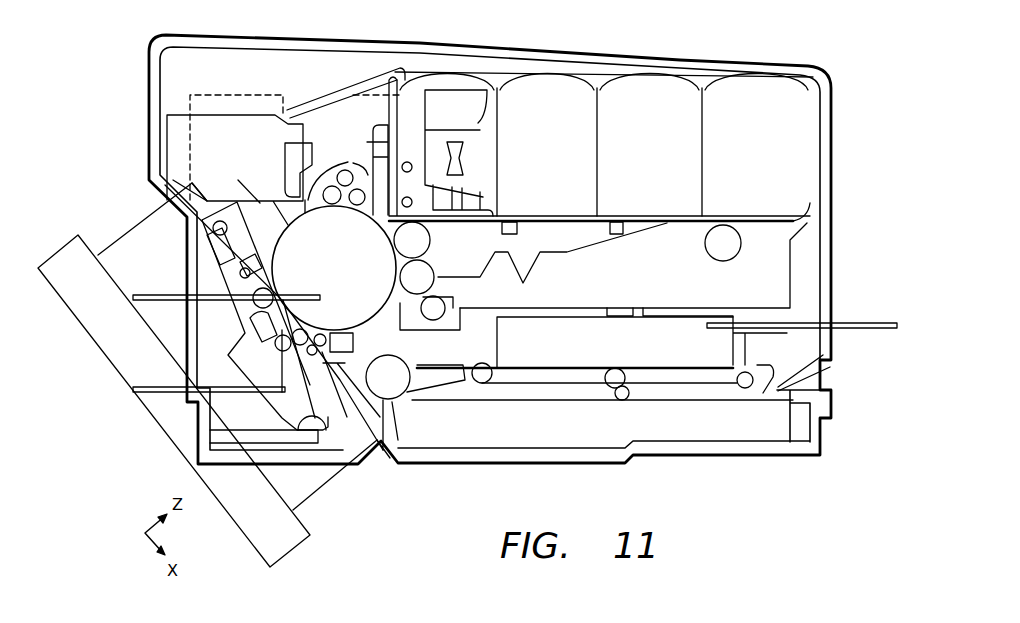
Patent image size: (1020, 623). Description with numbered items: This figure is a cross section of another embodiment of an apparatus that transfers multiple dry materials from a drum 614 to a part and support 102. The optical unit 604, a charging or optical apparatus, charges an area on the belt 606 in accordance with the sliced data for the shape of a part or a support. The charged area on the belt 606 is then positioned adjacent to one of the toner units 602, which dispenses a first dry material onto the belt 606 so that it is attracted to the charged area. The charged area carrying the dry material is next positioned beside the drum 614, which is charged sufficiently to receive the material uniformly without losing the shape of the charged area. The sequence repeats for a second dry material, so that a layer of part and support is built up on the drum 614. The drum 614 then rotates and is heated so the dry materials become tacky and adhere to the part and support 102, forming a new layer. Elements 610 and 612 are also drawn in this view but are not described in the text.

The part and support 102 is at (138, 233).
The toner unit 602 is at (417, 72).
The optical unit 604 is at (858, 323).
The belt 606 is at (790, 263).
The exit roller 610 is at (398, 440).
The lower guide bar 612 is at (132, 390).
The drum 614 is at (133, 297).